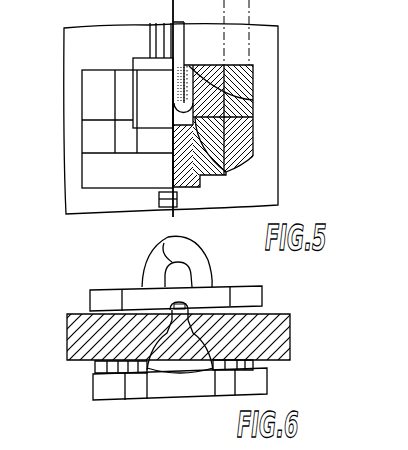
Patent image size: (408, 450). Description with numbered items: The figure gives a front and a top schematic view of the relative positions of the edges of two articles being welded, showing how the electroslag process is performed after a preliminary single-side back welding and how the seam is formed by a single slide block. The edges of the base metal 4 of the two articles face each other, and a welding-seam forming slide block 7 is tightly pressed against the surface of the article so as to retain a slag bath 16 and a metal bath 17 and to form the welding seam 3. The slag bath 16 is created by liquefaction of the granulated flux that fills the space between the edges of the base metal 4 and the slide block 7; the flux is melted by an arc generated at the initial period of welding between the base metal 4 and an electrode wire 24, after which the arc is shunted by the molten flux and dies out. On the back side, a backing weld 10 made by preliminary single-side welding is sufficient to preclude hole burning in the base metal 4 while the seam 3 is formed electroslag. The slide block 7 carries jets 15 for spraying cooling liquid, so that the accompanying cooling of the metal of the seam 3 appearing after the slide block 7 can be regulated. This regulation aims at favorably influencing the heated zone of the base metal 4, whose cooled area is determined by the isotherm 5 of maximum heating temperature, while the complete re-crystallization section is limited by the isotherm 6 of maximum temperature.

In FIG. 5, the welding seam 3 is at (164, 203).
In FIG. 6, the welding seam 3 is at (169, 356).
In FIG. 5, the base metal 4 is at (270, 49).
In FIG. 6, the base metal 4 is at (80, 343).
In FIG. 5, the isotherm of maximum heating temperature A1 5 is at (253, 157).
In FIG. 5, the isotherm of maximum temperature A3 6 is at (227, 169).
In FIG. 5, the slide block 7 is at (143, 61).
In FIG. 6, the slide block 7 is at (203, 372).
In FIG. 6, the backing weld 10 is at (171, 311).
In FIG. 5, the jet 15 is at (78, 106).
In FIG. 6, the jet 15 is at (223, 282).
In FIG. 5, the slag bath 16 is at (188, 66).
In FIG. 5, the metal bath 17 is at (176, 108).
In FIG. 5, the electrode wire 24 is at (174, 22).